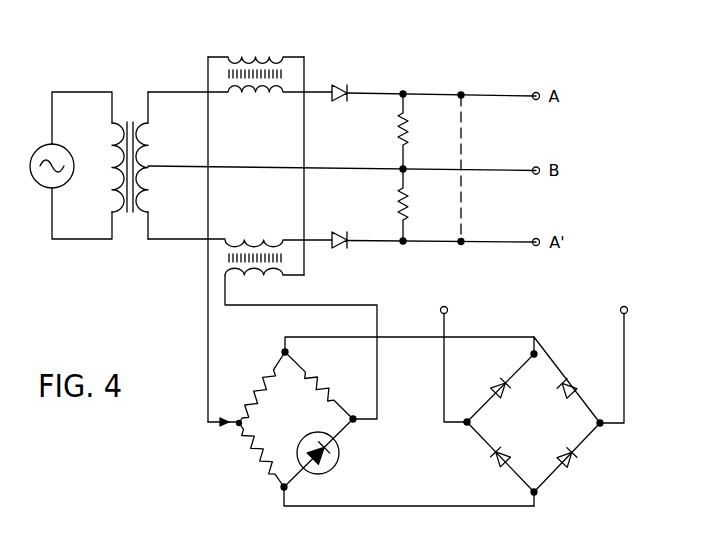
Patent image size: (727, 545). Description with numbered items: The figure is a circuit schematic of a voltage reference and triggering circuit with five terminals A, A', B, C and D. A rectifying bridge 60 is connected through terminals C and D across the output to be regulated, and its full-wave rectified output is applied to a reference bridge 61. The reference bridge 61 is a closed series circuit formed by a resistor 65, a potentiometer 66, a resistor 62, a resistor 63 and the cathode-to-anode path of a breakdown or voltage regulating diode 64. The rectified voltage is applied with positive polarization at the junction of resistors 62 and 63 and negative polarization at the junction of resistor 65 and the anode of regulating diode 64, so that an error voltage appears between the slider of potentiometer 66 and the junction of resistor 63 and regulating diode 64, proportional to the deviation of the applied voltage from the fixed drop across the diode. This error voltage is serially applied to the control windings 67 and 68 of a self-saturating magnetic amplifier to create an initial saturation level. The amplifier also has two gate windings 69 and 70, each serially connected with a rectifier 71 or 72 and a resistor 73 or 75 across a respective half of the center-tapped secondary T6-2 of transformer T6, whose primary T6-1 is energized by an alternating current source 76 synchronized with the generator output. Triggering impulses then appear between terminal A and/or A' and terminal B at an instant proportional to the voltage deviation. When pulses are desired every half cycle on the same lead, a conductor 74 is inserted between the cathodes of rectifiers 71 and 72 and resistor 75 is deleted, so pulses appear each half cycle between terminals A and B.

The alternating current source 76 is at (38, 147).
The transformer T6 is at (120, 116).
The primary T6-1 is at (118, 145).
The center-tapped secondary T6-2 is at (144, 135).
The control winding 67 is at (259, 59).
The gate winding 69 is at (262, 93).
The gate winding 70 is at (259, 240).
The control winding 68 is at (261, 275).
The rectifier 71 is at (337, 90).
The rectifier 72 is at (338, 232).
The resistor 73 is at (399, 130).
The resistor 75 is at (399, 208).
The conductor 74 is at (463, 129).
The reference bridge 61 is at (367, 421).
The resistor 62 is at (255, 375).
The resistor 63 is at (318, 372).
The resistor 65 is at (258, 463).
The potentiometer 66 is at (236, 428).
The voltage regulating diode 64 is at (342, 453).
The rectifying bridge 60 is at (525, 430).